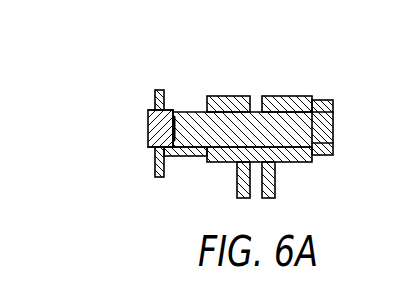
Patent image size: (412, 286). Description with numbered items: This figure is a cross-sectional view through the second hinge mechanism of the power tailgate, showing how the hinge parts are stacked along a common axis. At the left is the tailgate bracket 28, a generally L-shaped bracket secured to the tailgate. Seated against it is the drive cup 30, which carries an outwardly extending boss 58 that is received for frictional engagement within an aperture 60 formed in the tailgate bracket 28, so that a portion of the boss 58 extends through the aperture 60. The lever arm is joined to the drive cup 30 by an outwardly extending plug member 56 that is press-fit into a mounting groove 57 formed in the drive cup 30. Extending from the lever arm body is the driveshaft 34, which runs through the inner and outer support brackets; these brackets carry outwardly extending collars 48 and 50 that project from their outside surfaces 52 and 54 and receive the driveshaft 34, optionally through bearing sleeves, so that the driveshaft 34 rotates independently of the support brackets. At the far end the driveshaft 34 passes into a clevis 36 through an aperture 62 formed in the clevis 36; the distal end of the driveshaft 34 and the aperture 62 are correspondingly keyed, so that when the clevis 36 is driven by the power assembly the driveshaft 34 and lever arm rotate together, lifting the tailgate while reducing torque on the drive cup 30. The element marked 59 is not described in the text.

The tailgate bracket 28 is at (154, 103).
The drive cup 30 is at (172, 100).
The driveshaft 34 is at (256, 110).
The clevis 36 is at (323, 100).
The collar 48 is at (232, 96).
The collar 50 is at (297, 95).
The outside surface 52 is at (237, 190).
The outside surface 54 is at (275, 190).
The plug member 56 is at (200, 110).
The mounting groove 57 is at (177, 110).
The boss 58 is at (156, 133).
The end block 59 is at (148, 115).
The aperture 60 is at (154, 155).
The aperture 62 is at (334, 107).